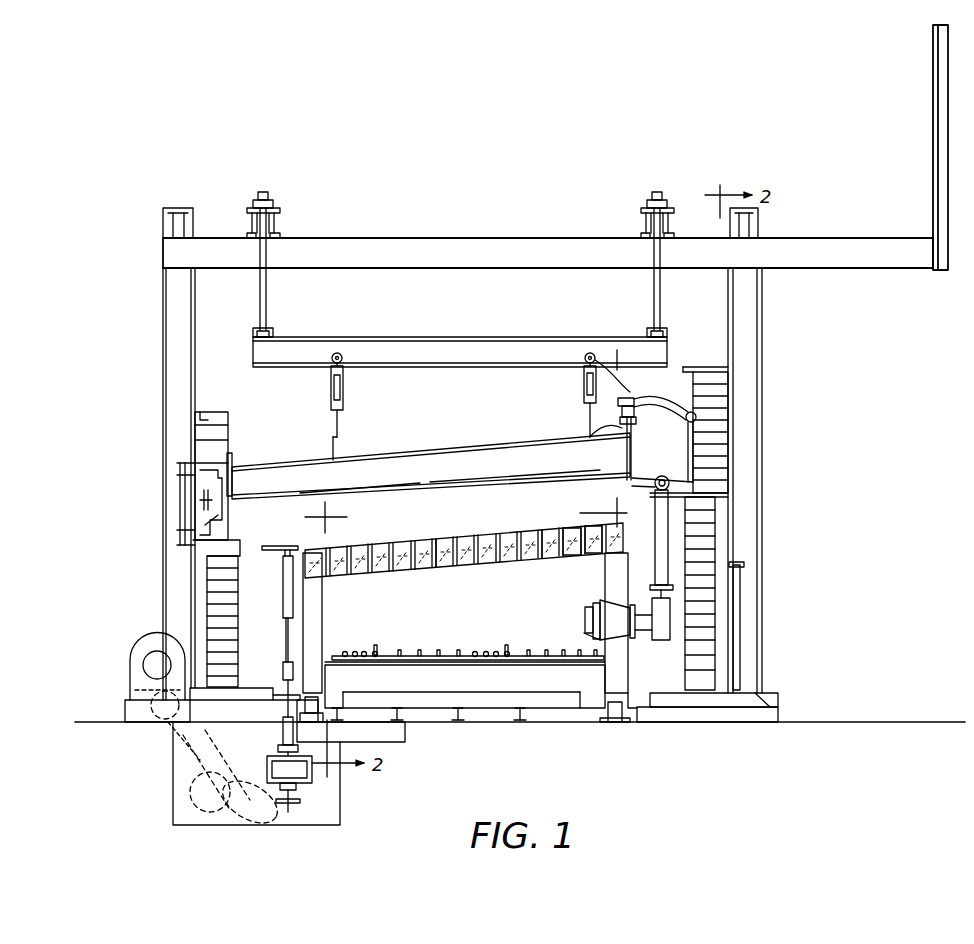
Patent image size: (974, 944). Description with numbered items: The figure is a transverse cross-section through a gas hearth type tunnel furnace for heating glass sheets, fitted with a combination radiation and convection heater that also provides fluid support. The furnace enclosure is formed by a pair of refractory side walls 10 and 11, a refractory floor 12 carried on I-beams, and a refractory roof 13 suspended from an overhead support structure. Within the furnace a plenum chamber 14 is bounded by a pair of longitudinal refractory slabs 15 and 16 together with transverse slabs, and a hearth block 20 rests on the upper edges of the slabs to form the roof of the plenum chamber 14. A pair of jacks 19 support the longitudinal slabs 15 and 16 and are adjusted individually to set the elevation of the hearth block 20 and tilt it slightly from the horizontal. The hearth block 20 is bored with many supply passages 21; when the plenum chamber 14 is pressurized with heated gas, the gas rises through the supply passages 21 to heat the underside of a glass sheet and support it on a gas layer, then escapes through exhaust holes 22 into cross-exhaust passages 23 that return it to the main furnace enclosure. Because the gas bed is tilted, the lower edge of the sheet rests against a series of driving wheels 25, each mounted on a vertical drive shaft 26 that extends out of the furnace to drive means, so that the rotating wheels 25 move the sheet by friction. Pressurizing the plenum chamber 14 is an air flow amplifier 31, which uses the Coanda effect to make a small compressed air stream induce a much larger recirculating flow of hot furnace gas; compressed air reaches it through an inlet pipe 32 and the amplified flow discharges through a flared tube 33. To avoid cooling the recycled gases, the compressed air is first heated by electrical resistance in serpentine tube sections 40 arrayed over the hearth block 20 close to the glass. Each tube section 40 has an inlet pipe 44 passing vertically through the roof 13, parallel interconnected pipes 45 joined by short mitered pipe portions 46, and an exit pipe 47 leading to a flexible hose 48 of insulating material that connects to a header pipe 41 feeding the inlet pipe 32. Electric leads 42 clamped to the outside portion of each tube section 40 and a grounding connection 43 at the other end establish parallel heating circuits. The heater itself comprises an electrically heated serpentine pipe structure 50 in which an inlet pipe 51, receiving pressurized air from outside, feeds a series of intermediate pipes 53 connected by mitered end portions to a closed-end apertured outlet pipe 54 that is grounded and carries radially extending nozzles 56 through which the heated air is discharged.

The refractory side wall 10 is at (234, 550).
The refractory side wall 11 is at (684, 553).
The refractory floor 12 is at (584, 626).
The refractory roof 13 is at (462, 452).
The plenum chamber 14 is at (525, 572).
The longitudinal refractory slab 15 is at (324, 588).
The longitudinal refractory slab 16 is at (604, 562).
The jack 19 is at (296, 722).
The hearth block 20 is at (545, 562).
The supply passage 21 is at (458, 570).
The exhaust hole 22 is at (568, 527).
The cross-exhaust passage 23 is at (600, 527).
The driving wheel 25 is at (278, 544).
The vertical drive shaft 26 is at (279, 580).
The air flow amplifier 31 is at (592, 604).
The inlet pipe 32 is at (649, 538).
The flared tube 33 is at (592, 636).
The tube section 40 is at (528, 482).
The header pipe 41 is at (653, 485).
The electric lead 42 is at (622, 398).
The grounding connection 43 is at (587, 425).
The inlet pipe 44 is at (583, 383).
The parallel interconnected pipe 45 is at (398, 497).
The mitered pipe portion 46 is at (648, 477).
The exit pipe 47 is at (634, 455).
The flexible hose 48 is at (662, 400).
The serpentine pipe structure 50 is at (365, 672).
The inlet pipe 51 is at (345, 651).
The intermediate pipe 53 is at (356, 651).
The apertured outlet pipe 54 is at (372, 660).
The nozzle 56 is at (377, 647).